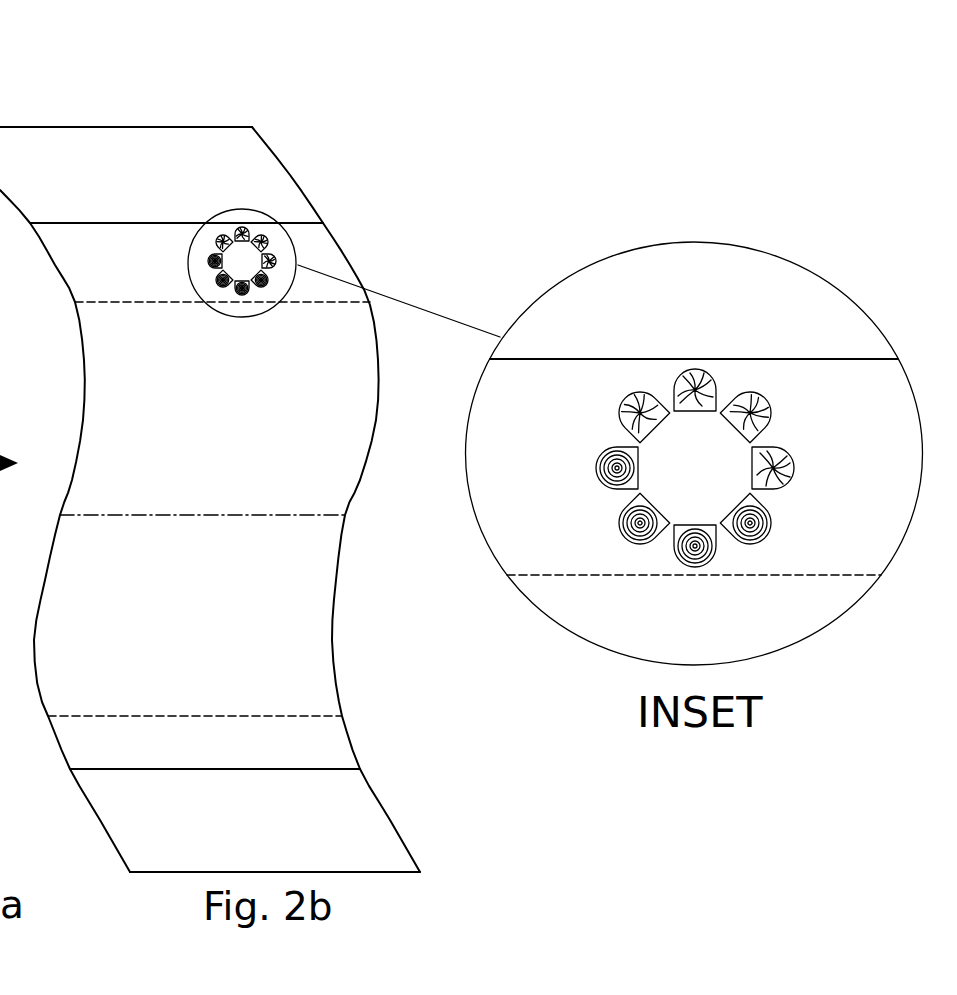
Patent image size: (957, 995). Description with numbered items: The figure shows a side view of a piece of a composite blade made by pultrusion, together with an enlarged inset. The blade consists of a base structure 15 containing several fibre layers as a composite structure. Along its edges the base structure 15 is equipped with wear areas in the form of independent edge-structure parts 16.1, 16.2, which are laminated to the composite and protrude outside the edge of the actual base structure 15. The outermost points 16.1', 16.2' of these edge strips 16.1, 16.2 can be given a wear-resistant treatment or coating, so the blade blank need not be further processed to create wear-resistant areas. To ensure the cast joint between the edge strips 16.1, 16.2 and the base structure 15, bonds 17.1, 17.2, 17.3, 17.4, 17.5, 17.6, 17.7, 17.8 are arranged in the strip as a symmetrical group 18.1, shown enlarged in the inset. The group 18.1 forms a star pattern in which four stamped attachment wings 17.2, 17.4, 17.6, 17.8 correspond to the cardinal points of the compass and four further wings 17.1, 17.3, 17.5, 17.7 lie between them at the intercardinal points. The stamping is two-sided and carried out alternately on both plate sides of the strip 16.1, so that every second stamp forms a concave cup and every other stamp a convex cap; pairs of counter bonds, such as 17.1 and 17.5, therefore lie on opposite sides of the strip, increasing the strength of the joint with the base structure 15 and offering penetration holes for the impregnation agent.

The base structure 15 is at (222, 483).
The edge-structure part 16.1 is at (296, 297).
The point of edge-structure part 16.1' is at (178, 90).
The edge-structure part 16.2 is at (296, 801).
The point of edge-structure part 16.2' is at (331, 892).
The group of bonds 18.1 is at (268, 192).
The bond 17.1 is at (768, 400).
The bond 17.2 is at (793, 462).
The bond 17.3 is at (775, 513).
The bond 17.4 is at (668, 553).
The bond 17.5 is at (607, 510).
The bond 17.6 is at (592, 457).
The bond 17.7 is at (632, 390).
The bond 17.8 is at (705, 365).